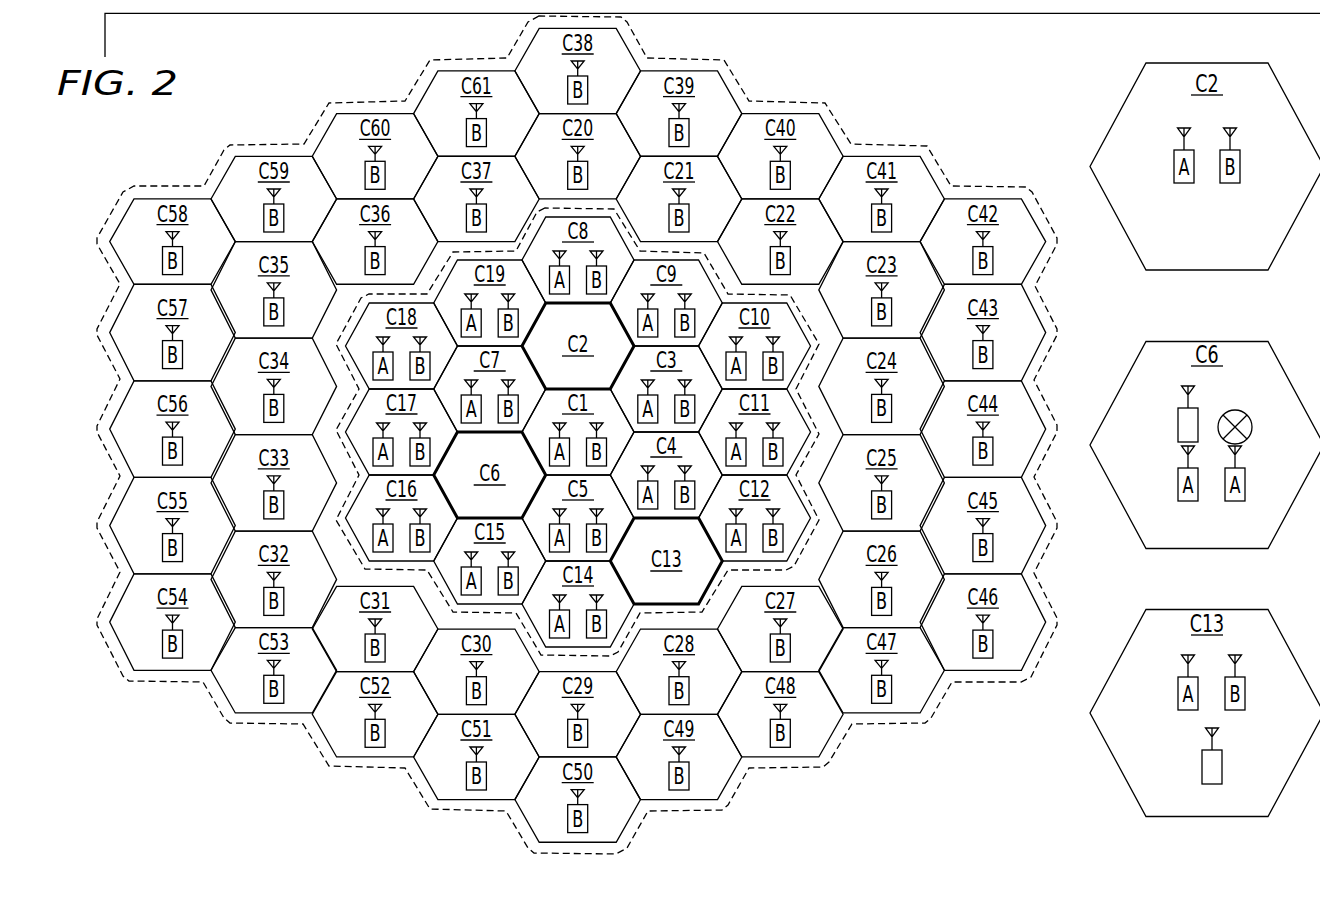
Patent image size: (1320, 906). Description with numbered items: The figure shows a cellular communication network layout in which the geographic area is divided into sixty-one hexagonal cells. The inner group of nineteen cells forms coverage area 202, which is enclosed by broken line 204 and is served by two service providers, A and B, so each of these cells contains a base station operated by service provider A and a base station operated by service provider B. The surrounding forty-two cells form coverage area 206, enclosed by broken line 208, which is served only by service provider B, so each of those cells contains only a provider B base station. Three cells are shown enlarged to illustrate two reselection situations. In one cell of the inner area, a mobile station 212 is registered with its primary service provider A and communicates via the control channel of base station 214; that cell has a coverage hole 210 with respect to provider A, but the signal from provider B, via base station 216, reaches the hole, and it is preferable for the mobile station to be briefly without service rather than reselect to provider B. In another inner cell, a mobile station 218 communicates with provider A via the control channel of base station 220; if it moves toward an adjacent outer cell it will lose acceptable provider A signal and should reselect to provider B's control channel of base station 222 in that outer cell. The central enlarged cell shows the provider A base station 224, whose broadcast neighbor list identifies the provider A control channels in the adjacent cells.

The coverage area 202 is at (356, 463).
The broken line 204 is at (348, 371).
The coverage area 206 is at (815, 101).
The broken line 208 is at (945, 152).
The coverage hole 210 is at (1252, 427).
The mobile station 212 is at (1178, 427).
The base station 214 is at (1178, 488).
The base station 216 is at (1245, 488).
The mobile station 218 is at (1201, 768).
The base station 220 is at (1178, 695).
The base station 222 is at (669, 691).
The base station 224 is at (1174, 167).